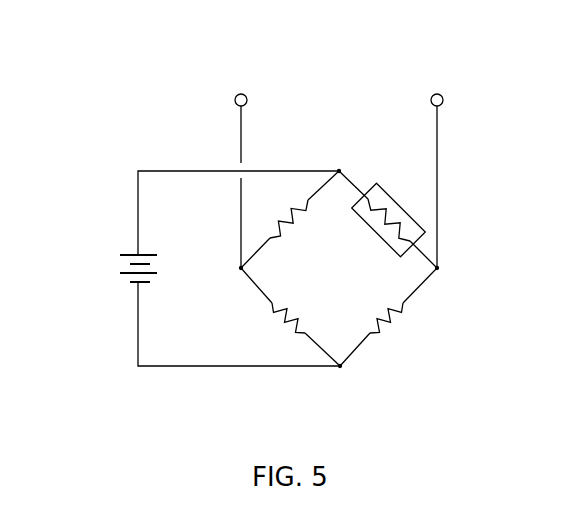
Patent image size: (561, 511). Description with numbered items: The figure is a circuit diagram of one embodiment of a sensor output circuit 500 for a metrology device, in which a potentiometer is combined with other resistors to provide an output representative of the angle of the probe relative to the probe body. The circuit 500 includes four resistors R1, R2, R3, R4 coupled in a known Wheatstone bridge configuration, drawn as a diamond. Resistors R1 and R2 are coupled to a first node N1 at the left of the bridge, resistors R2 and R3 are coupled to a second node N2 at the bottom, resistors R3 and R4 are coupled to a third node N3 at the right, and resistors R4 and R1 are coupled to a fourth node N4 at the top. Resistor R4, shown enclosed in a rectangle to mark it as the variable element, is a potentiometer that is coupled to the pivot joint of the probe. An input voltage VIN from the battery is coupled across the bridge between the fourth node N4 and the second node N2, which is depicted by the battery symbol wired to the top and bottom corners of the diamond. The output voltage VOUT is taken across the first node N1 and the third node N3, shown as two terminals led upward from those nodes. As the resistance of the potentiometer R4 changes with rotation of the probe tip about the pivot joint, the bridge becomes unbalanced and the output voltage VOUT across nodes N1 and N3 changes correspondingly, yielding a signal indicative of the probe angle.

The circuit 500 is at (140, 66).
The resistor R1 is at (290, 219).
The resistor R2 is at (290, 317).
The resistor R3 is at (388, 317).
The potentiometer R4 is at (388, 219).
The first node N1 is at (228, 274).
The second node N2 is at (338, 382).
The third node N3 is at (454, 273).
The fourth node N4 is at (341, 157).
The input voltage VIN is at (118, 266).
The output voltage VOUT is at (339, 180).